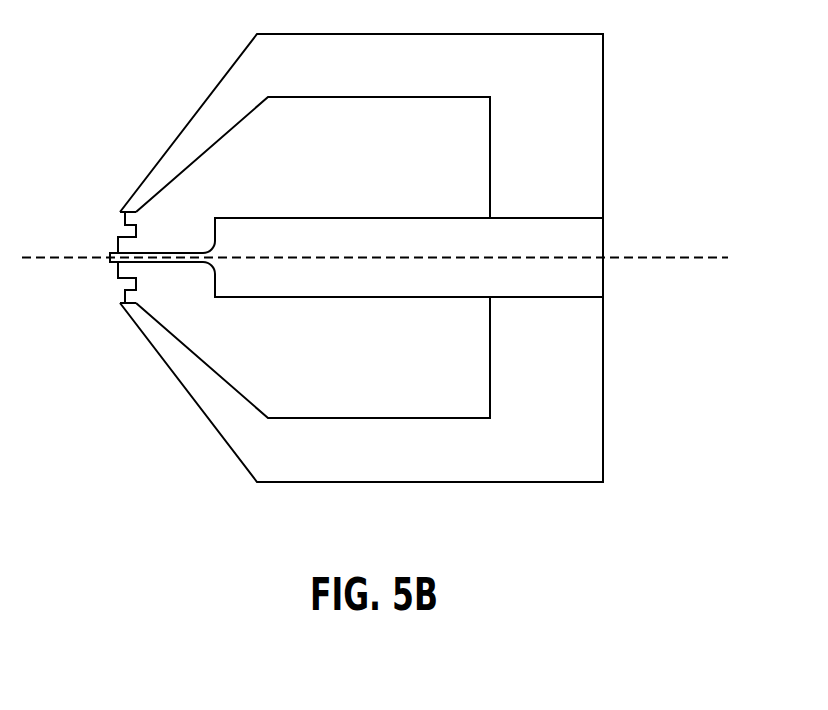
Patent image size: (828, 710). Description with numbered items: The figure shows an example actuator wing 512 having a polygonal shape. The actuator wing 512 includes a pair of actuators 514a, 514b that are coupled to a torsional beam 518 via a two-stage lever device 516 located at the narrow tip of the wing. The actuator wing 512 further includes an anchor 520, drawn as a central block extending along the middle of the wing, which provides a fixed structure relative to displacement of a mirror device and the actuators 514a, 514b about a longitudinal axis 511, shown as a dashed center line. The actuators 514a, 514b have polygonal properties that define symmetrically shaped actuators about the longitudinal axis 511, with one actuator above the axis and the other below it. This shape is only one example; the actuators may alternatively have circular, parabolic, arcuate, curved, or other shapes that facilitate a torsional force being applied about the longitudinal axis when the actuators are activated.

The longitudinal axis 511 is at (680, 255).
The actuator wing 512 is at (118, 80).
The actuator 514a is at (413, 80).
The actuator 514b is at (413, 470).
The two-stage lever device 516 is at (169, 217).
The torsional beam 518 is at (173, 262).
The anchor 520 is at (407, 290).